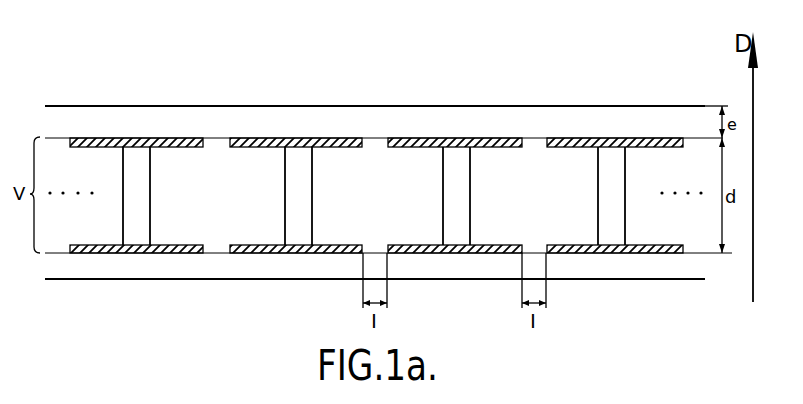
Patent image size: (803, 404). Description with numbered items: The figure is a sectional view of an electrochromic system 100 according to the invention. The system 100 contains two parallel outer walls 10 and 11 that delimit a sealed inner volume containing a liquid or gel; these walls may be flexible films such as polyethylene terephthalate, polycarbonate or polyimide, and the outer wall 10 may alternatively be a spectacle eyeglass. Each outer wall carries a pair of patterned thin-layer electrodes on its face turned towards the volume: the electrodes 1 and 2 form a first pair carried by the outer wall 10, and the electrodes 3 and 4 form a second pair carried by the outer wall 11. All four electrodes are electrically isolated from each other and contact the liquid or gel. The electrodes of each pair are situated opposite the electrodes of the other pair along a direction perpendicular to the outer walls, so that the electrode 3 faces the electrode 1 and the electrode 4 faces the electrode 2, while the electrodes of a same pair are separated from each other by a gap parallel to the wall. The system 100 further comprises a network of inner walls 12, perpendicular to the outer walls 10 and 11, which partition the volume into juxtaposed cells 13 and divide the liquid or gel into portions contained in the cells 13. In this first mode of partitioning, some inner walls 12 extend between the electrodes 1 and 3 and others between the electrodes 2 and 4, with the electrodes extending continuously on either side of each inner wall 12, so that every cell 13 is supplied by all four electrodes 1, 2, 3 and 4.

The electrochromic system 100 is at (114, 97).
The outer wall 11 is at (579, 110).
The outer wall 10 is at (572, 262).
The electrode 3 is at (170, 146).
The electrode 4 is at (313, 146).
The electrode 1 is at (103, 252).
The electrode 2 is at (265, 252).
The inner walls 12 is at (143, 218).
The cells 13 is at (226, 204).